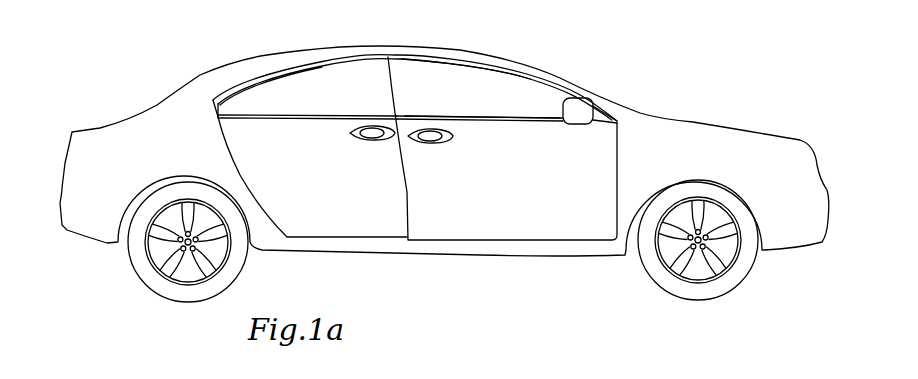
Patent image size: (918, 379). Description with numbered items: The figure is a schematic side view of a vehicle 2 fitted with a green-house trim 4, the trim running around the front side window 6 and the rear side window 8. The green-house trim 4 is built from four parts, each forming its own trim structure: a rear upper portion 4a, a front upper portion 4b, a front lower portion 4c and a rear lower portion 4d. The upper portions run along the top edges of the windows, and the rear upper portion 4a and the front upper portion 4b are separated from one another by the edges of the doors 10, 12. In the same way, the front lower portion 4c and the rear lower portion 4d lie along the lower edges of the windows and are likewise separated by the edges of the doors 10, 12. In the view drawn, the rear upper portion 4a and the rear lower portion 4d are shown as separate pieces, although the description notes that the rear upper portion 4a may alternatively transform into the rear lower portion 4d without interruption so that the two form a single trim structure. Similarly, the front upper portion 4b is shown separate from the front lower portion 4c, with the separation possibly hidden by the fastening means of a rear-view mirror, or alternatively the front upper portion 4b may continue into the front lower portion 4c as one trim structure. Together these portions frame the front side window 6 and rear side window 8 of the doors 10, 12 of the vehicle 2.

The vehicle 2 is at (715, 45).
The green-house trim 4 is at (461, 62).
The rear upper portion 4a is at (267, 80).
The front upper portion 4b is at (528, 84).
The front lower portion 4c is at (501, 122).
The rear lower portion 4d is at (293, 119).
The front side window 6 is at (462, 102).
The rear side window 8 is at (337, 102).
The door 10 is at (508, 193).
The door 12 is at (350, 189).